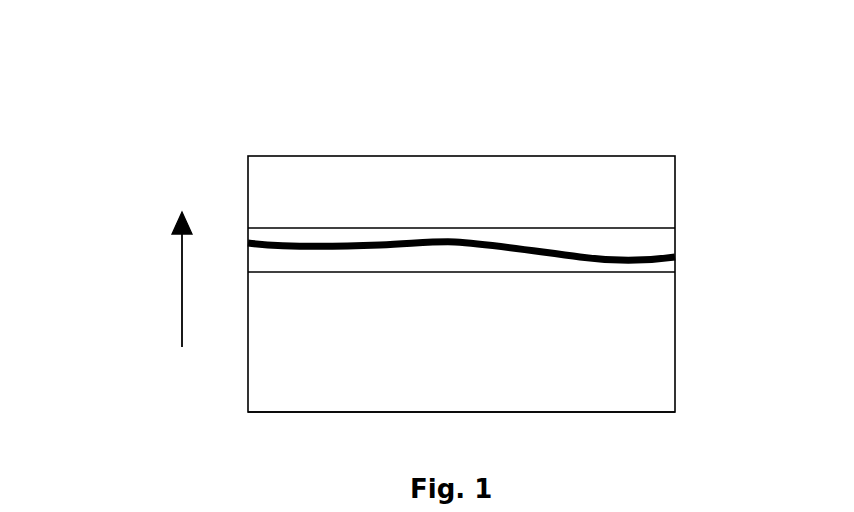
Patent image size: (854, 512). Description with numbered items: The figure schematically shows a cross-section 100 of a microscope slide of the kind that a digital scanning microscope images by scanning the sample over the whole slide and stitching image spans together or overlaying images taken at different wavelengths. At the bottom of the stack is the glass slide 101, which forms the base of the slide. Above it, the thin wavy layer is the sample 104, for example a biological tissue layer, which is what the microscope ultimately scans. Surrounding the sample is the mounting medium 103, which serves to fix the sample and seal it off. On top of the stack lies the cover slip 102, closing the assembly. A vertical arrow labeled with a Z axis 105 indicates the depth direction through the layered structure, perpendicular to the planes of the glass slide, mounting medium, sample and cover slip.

The cross-section 100 is at (318, 114).
The glass slide 101 is at (414, 393).
The cover slip 102 is at (430, 178).
The mounting medium 103 is at (497, 263).
The sample 104 is at (248, 242).
The Z direction axis 105 is at (182, 285).